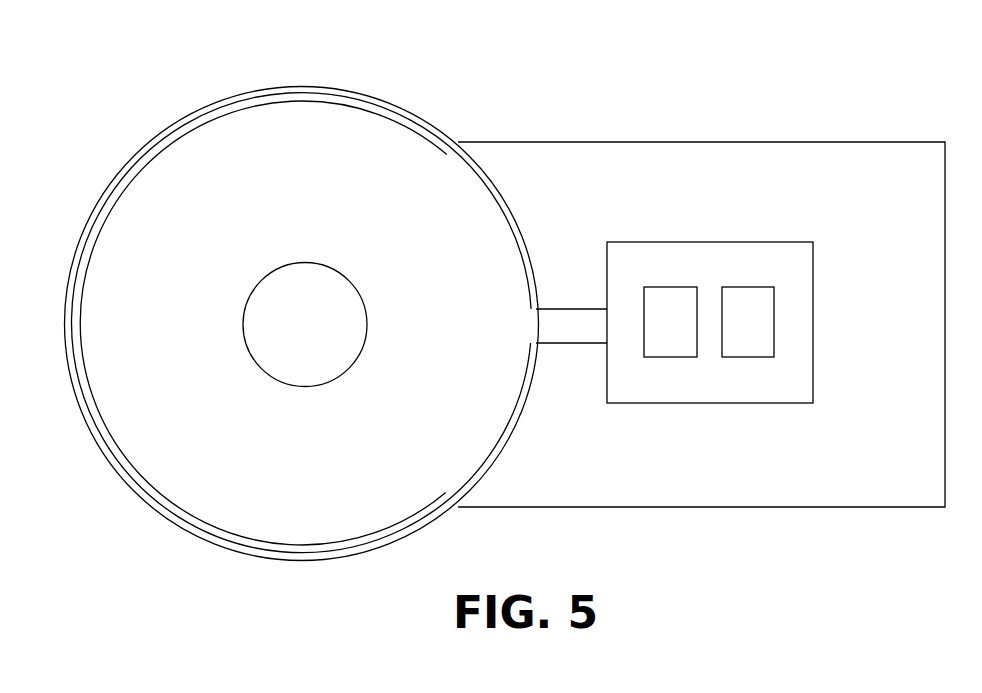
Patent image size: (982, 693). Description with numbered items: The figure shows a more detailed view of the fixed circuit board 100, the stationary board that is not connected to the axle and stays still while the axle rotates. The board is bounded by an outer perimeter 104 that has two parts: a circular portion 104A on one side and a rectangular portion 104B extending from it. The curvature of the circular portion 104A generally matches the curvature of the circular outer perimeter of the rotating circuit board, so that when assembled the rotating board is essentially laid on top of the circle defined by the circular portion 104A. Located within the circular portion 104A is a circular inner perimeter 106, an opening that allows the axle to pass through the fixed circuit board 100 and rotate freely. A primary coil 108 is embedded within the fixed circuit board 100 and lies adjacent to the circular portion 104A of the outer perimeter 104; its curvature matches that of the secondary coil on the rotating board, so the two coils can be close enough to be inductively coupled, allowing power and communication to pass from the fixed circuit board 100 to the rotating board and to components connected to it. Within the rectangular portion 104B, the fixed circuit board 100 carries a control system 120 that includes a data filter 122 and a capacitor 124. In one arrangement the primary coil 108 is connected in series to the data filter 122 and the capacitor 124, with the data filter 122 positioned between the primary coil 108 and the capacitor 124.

The fixed circuit board 100 is at (487, 311).
The outer perimeter 104 is at (487, 311).
The circular portion 104A is at (280, 283).
The rectangular portion 104B is at (865, 142).
The circular inner perimeter 106 is at (300, 386).
The primary coil 108 is at (225, 106).
The control system 120 is at (670, 385).
The data filter 122 is at (660, 305).
The capacitor 124 is at (750, 343).